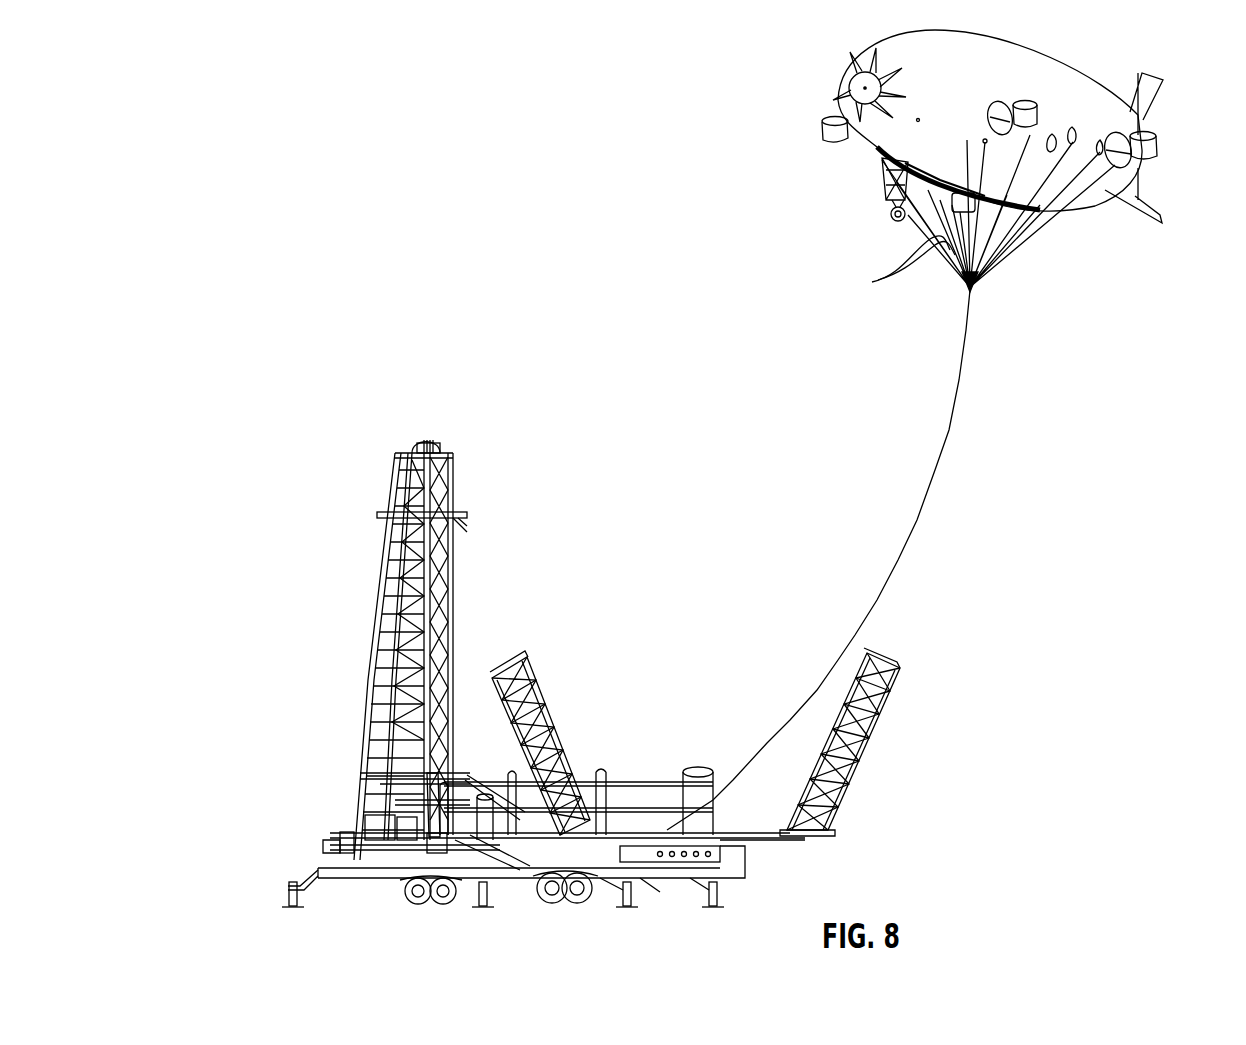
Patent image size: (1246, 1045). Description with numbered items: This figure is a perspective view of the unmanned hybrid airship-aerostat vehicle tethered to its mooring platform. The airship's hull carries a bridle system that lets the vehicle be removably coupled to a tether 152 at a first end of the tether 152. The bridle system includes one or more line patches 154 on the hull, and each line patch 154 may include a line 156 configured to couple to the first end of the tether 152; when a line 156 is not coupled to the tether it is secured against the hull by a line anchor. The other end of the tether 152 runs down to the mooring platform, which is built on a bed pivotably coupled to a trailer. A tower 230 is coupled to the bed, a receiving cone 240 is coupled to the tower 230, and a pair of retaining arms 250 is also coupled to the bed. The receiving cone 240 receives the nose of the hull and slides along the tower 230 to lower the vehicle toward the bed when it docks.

The tether 152 is at (905, 538).
The line patch 154 is at (1030, 133).
The line 156 is at (873, 282).
The tower 230 is at (383, 575).
The receiving cone 240 is at (425, 442).
The retaining arms 250 is at (545, 700).